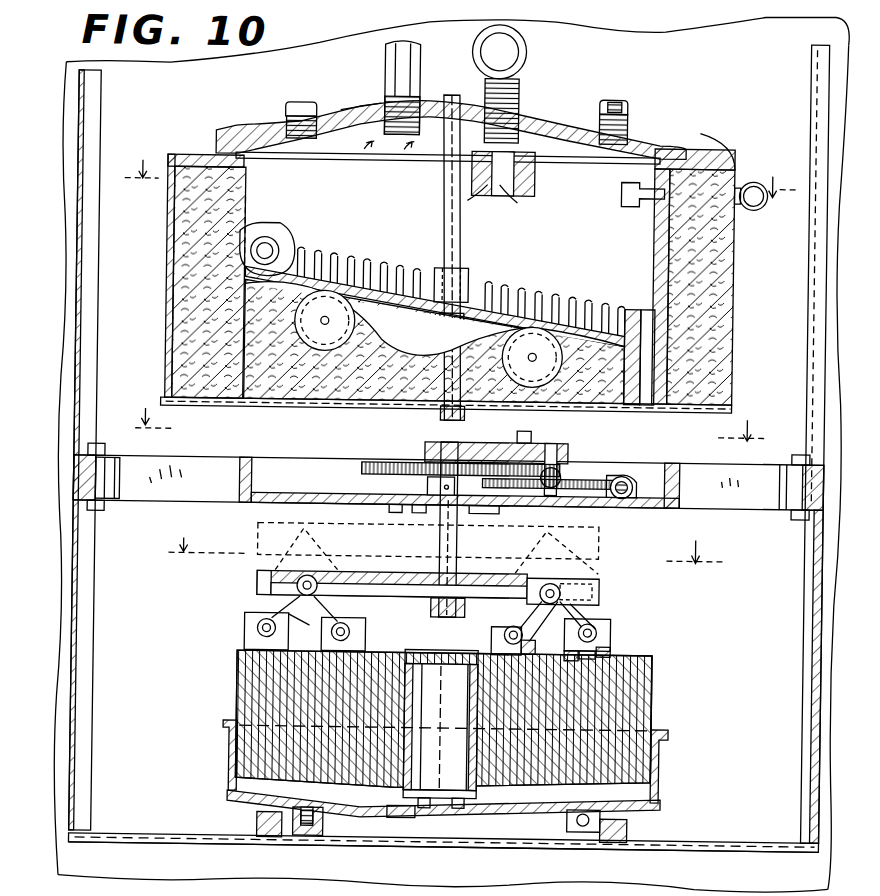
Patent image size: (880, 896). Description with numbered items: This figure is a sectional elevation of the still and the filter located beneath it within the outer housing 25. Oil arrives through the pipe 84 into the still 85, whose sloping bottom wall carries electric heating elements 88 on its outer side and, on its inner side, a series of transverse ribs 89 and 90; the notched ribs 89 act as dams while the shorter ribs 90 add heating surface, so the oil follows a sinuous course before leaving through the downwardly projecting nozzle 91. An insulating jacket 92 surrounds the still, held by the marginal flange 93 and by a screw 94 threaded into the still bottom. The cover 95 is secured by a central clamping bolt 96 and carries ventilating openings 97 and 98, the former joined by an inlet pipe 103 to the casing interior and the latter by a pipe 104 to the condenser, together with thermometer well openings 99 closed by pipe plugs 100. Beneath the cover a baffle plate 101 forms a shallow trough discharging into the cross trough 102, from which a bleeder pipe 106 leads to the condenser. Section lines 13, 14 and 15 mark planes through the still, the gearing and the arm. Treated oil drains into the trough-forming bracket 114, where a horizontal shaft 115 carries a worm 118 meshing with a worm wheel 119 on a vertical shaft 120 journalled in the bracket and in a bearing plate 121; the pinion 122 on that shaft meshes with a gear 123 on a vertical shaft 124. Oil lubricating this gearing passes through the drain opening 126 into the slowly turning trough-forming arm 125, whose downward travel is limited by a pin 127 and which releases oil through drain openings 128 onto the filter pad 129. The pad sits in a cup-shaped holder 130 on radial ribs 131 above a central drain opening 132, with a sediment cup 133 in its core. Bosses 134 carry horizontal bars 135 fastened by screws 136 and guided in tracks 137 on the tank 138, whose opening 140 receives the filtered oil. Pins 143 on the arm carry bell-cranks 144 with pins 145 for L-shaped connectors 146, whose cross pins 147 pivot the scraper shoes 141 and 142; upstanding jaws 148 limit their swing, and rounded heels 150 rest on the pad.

The outer housing 25 is at (729, 42).
The marginal flange 93 is at (186, 157).
The still 85 is at (212, 200).
The insulating jacket 92 is at (698, 326).
The nozzle 91 is at (640, 403).
The cover 95 is at (543, 126).
The baffle plate 101 is at (391, 165).
The ventilating opening 98 is at (367, 120).
The thermometer well openings 99 is at (273, 130).
The pipe plugs 100 is at (611, 110).
The pipe 104 is at (397, 62).
The inlet pipe 103 is at (519, 52).
The ventilating opening 97 is at (518, 179).
The clamping bolt 96 is at (440, 208).
The screw 94 is at (440, 417).
The cross trough 102 is at (636, 204).
The bleeder pipe 106 is at (742, 206).
The pipe 84 is at (269, 242).
The ribs 89 is at (518, 290).
The ribs 90 is at (571, 298).
The electric heating elements 88 is at (322, 335).
The section line 13 is at (454, 180).
The section line 14 is at (446, 429).
The section line 15 is at (445, 553).
The bracket 114 is at (636, 505).
The bearing plate 121 is at (490, 460).
The gear 123 is at (390, 473).
The worm wheel 119 is at (572, 481).
The pinion 122 is at (560, 468).
The worm 118 is at (623, 472).
The horizontal shaft 115 is at (634, 480).
The vertical shaft 120 is at (540, 446).
The oil drain opening 126 is at (425, 516).
The vertical shaft 124 is at (460, 540).
The trough-forming arm 125 is at (260, 587).
The drain openings 128 is at (287, 582).
The pins 143 is at (564, 584).
The scraper shoe 141 is at (247, 643).
The scraper shoe 142 is at (364, 647).
The pin 127 is at (474, 609).
The pins 145 is at (508, 627).
The bell-crank 144 is at (594, 618).
The L-shaped connector 146 is at (602, 638).
The cross pin 147 is at (614, 650).
The heel 150 is at (614, 653).
The jaws 148 is at (491, 652).
The sediment cup 133 is at (441, 652).
The filter pad 129 is at (628, 686).
The holder 130 is at (664, 756).
The radial ribs 131 is at (527, 811).
The drain opening 132 is at (446, 812).
The horizontal bars 135 is at (398, 818).
The tracks 137 is at (262, 817).
The screws 136 is at (312, 838).
The bosses 134 is at (618, 812).
The tank 138 is at (713, 844).
The opening 140 is at (458, 848).